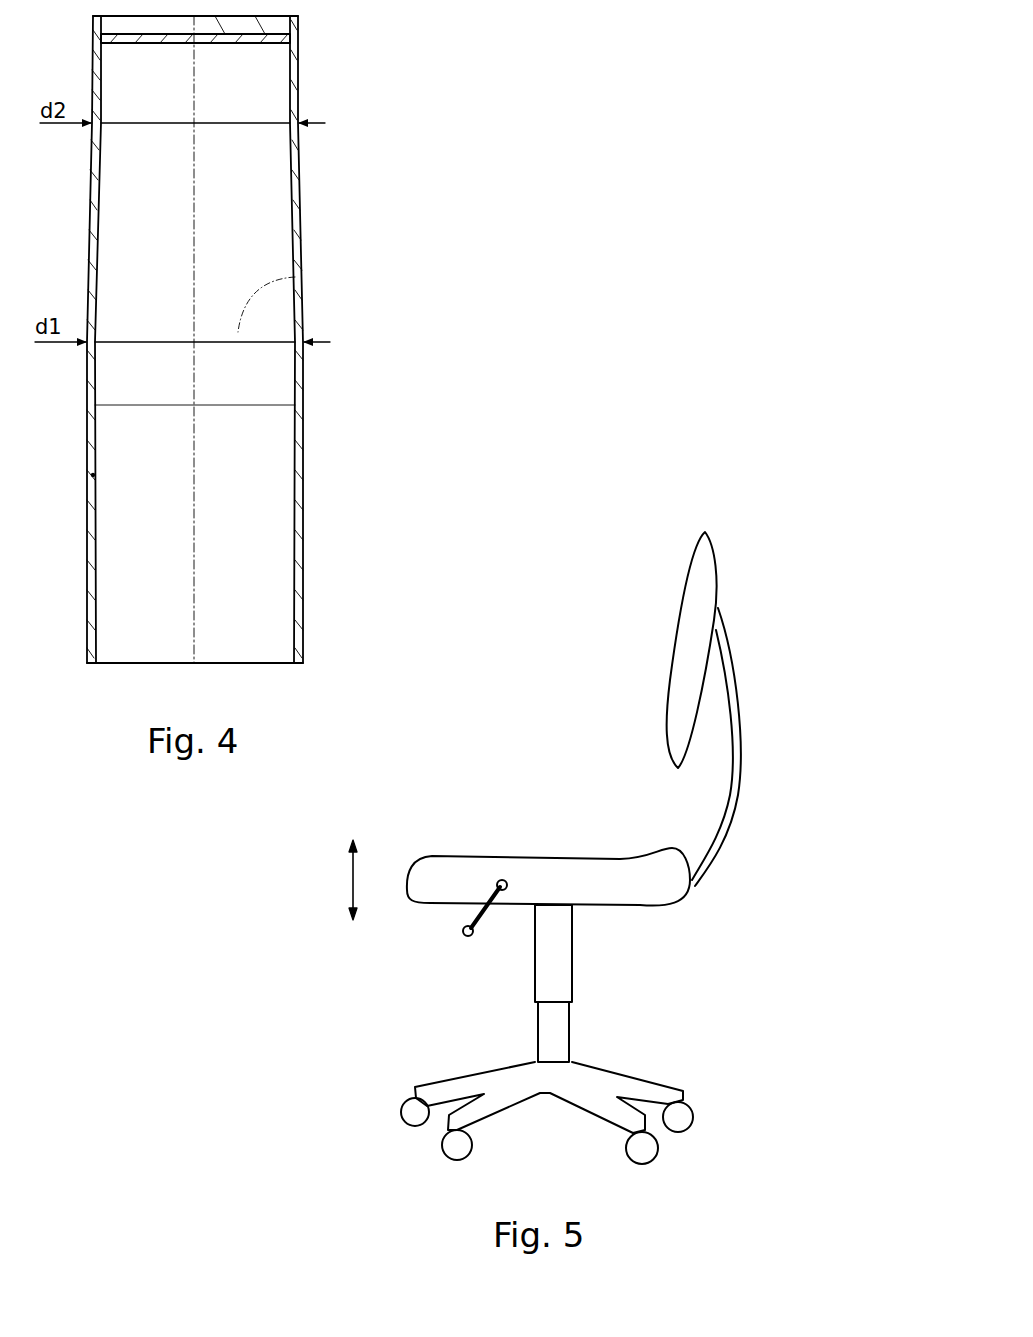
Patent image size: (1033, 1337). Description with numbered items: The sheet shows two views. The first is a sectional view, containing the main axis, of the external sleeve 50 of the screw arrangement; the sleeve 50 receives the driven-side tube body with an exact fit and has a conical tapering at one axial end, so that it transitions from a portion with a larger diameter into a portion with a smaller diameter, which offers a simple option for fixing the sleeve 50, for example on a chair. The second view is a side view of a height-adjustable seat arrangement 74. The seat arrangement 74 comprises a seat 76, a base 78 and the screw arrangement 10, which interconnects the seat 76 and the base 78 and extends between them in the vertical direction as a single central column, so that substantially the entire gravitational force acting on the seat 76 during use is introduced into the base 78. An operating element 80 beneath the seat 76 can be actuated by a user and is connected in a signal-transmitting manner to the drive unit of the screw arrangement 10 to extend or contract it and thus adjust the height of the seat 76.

In FIG. 4, the external sleeve 50 is at (300, 92).
In FIG. 5, the seat arrangement 74 is at (545, 848).
In FIG. 5, the seat 76 is at (597, 878).
In FIG. 5, the operating element 80 is at (464, 932).
In FIG. 5, the screw arrangement 10 is at (565, 978).
In FIG. 5, the base 78 is at (645, 1085).